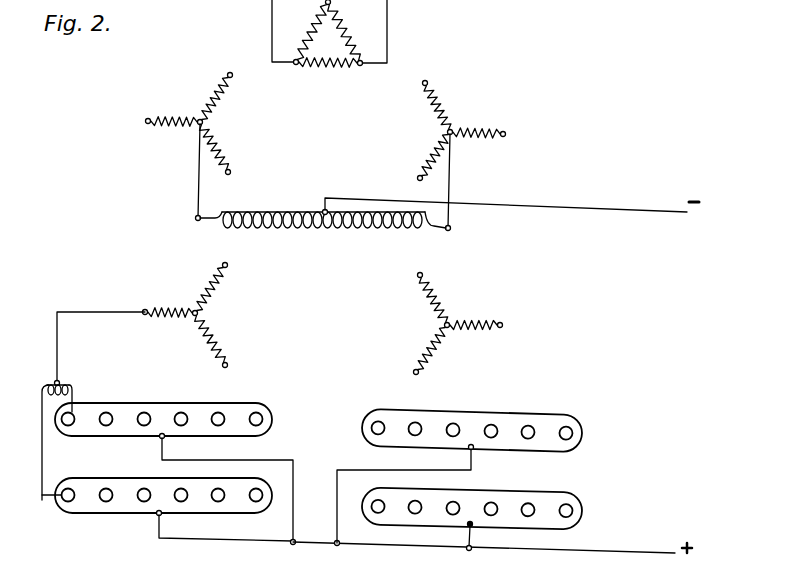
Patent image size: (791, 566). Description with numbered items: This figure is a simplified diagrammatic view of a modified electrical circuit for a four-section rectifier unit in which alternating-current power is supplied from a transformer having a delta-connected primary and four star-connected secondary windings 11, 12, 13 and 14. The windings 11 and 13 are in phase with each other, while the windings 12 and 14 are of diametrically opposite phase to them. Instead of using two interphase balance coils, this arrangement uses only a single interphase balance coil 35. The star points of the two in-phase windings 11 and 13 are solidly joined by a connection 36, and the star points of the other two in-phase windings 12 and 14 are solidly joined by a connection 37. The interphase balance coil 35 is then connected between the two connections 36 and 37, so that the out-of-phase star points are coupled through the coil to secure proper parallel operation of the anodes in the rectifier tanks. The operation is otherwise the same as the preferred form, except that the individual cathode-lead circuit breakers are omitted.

The star-connected secondary winding 11 is at (197, 117).
The star-connected secondary winding 12 is at (457, 124).
The star-connected secondary winding 13 is at (193, 307).
The star-connected secondary winding 14 is at (450, 332).
The interphase balance coil 35 is at (317, 230).
The connection 36 is at (197, 185).
The connection 37 is at (451, 251).